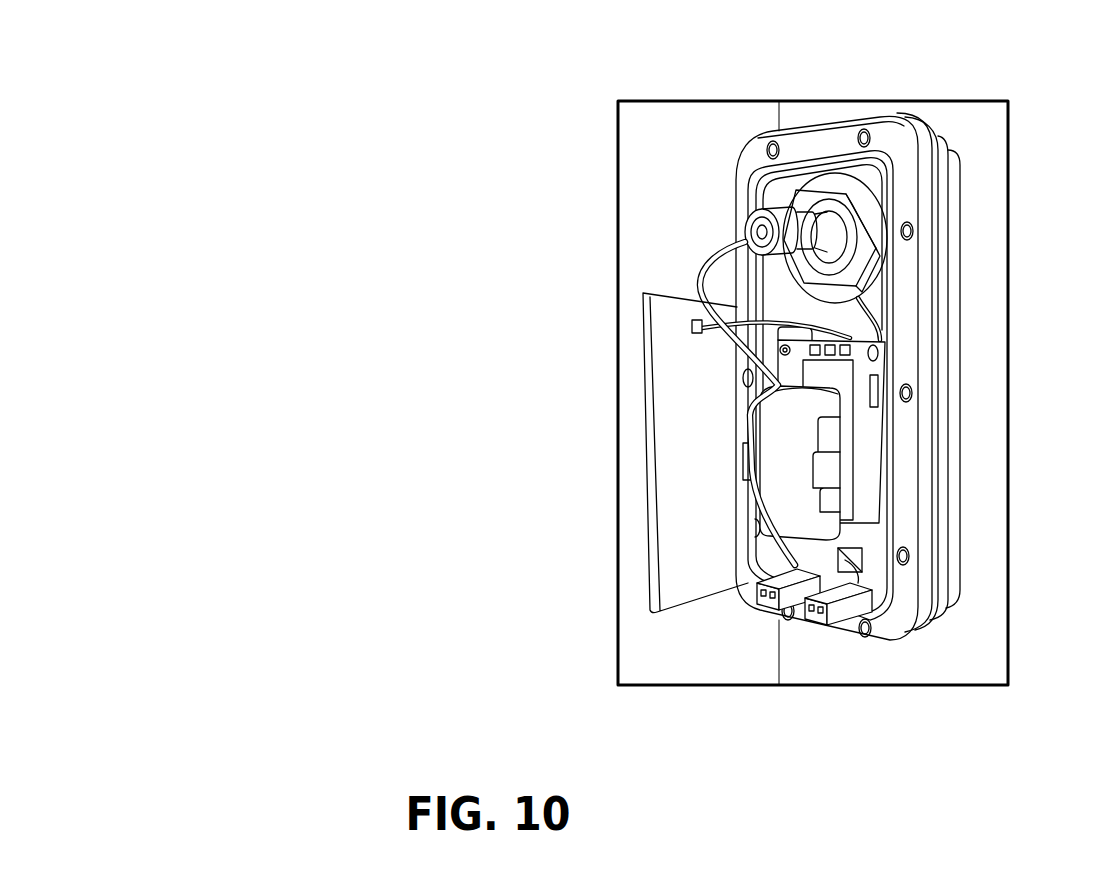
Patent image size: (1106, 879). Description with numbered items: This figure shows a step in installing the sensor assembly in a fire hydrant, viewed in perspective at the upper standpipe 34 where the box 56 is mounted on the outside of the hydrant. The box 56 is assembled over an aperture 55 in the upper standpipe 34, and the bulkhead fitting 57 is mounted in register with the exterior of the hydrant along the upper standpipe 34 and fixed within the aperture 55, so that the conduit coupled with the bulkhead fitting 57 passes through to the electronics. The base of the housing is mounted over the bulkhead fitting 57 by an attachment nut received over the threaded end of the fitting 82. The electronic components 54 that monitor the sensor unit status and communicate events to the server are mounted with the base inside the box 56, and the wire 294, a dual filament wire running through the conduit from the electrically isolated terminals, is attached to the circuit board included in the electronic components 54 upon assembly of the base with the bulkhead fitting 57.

The upper standpipe 34 is at (985, 137).
The electronic components 54 is at (709, 540).
The aperture 55 is at (870, 432).
The box 56 is at (832, 124).
The bulkhead fitting 57 is at (836, 222).
The fitting 82 is at (852, 268).
The wire 294 is at (713, 258).